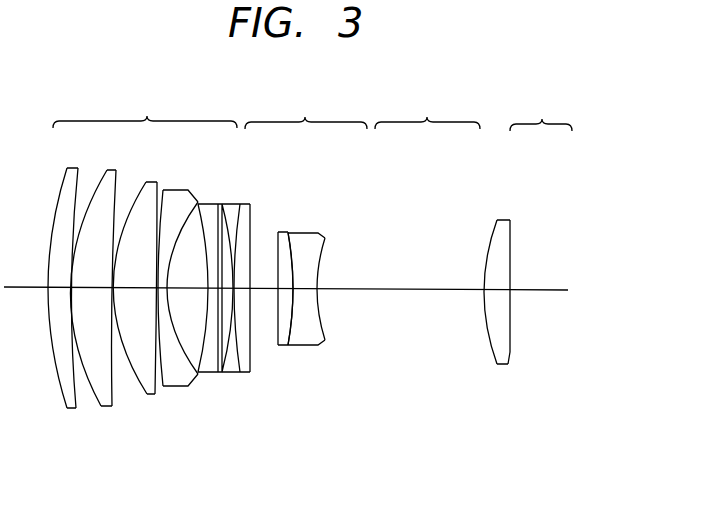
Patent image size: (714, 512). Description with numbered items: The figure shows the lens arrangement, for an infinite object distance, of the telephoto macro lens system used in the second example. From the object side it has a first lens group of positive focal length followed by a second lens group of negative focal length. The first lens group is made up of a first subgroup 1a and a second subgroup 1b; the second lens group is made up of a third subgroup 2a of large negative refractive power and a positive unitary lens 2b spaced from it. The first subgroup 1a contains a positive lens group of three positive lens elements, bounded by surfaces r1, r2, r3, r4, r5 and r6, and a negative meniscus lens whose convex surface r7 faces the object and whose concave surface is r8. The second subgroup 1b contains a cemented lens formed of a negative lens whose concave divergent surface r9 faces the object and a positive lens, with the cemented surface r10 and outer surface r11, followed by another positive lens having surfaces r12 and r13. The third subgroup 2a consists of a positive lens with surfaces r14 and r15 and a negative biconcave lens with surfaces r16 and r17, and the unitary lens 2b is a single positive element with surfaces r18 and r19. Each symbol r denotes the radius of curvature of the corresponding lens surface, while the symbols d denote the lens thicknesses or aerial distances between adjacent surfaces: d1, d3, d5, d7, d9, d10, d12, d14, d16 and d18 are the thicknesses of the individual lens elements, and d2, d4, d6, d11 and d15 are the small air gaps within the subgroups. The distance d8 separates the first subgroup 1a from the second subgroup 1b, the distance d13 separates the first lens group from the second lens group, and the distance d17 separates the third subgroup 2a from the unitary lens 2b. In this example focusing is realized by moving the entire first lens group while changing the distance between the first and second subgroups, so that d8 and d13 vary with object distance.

The first subgroup 1a is at (145, 101).
The second subgroup 1b is at (306, 103).
The third subgroup 2a is at (427, 103).
The positive unitary lens 2b is at (542, 105).
The radius of curvature of lens surface 1 r1 is at (67, 168).
The radius of curvature of lens surface 2 r2 is at (78, 168).
The radius of curvature of lens surface 3 r3 is at (107, 170).
The radius of curvature of lens surface 4 r4 is at (116, 170).
The radius of curvature of lens surface 5 r5 is at (146, 182).
The radius of curvature of lens surface 6 r6 is at (157, 182).
The radius of curvature of lens surface 7 r7 is at (165, 190).
The radius of curvature of lens surface 8 r8 is at (198, 202).
The radius of curvature of lens surface 9 r9 is at (200, 204).
The radius of curvature of lens surface 10 r10 is at (218, 204).
The radius of curvature of lens surface 11 r11 is at (225, 204).
The radius of curvature of lens surface 12 r12 is at (240, 204).
The radius of curvature of lens surface 13 r13 is at (250, 204).
The radius of curvature of lens surface 14 r14 is at (280, 232).
The radius of curvature of lens surface 15 r15 is at (290, 232).
The radius of curvature of lens surface 16 r16 is at (300, 233).
The radius of curvature of lens surface 17 r17 is at (322, 235).
The radius of curvature of lens surface 18 r18 is at (500, 220).
The radius of curvature of lens surface 19 r19 is at (510, 220).
The lens thickness d1 is at (58, 288).
The aerial distance d2 is at (73, 290).
The lens thickness d3 is at (92, 288).
The aerial distance d4 is at (113, 288).
The lens thickness d5 is at (135, 288).
The aerial distance d6 is at (158, 288).
The lens thickness d7 is at (162, 288).
The aerial distance d8 is at (187, 288).
The lens thickness d9 is at (213, 288).
The lens thickness d10 is at (225, 288).
The aerial distance d11 is at (234, 288).
The lens thickness d12 is at (242, 288).
The aerial distance d13 is at (264, 288).
The lens thickness d14 is at (285, 288).
The aerial distance d15 is at (293, 289).
The lens thickness d16 is at (305, 289).
The aerial distance d17 is at (448, 290).
The lens thickness d18 is at (499, 291).